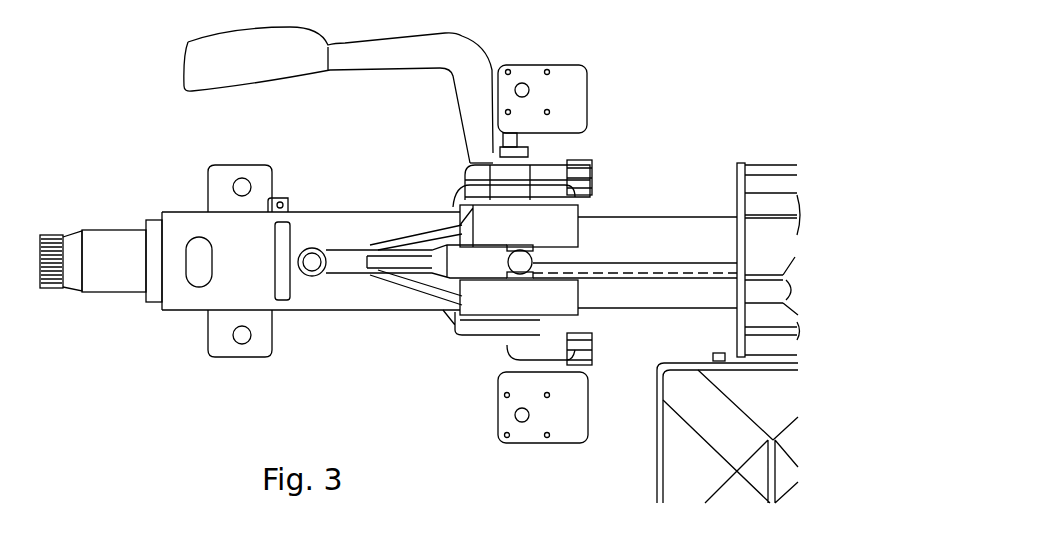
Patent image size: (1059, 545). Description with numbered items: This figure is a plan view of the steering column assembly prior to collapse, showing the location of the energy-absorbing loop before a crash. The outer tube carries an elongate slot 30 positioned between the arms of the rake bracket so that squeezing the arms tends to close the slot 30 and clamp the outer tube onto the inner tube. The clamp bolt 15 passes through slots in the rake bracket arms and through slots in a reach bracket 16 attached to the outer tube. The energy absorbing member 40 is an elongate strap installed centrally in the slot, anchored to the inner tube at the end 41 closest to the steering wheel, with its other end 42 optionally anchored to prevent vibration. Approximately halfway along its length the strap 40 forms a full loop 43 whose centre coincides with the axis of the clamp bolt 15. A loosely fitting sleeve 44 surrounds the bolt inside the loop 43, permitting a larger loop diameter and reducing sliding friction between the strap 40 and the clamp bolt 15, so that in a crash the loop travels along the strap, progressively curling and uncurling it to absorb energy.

The clamp bolt 15 is at (510, 248).
The reach bracket 16 is at (481, 325).
The elongate slot 30 is at (387, 250).
The energy absorbing member 40 is at (388, 272).
The end 41 is at (319, 249).
The other end 42 is at (723, 265).
The loop 43 is at (550, 252).
The sleeve 44 is at (503, 247).